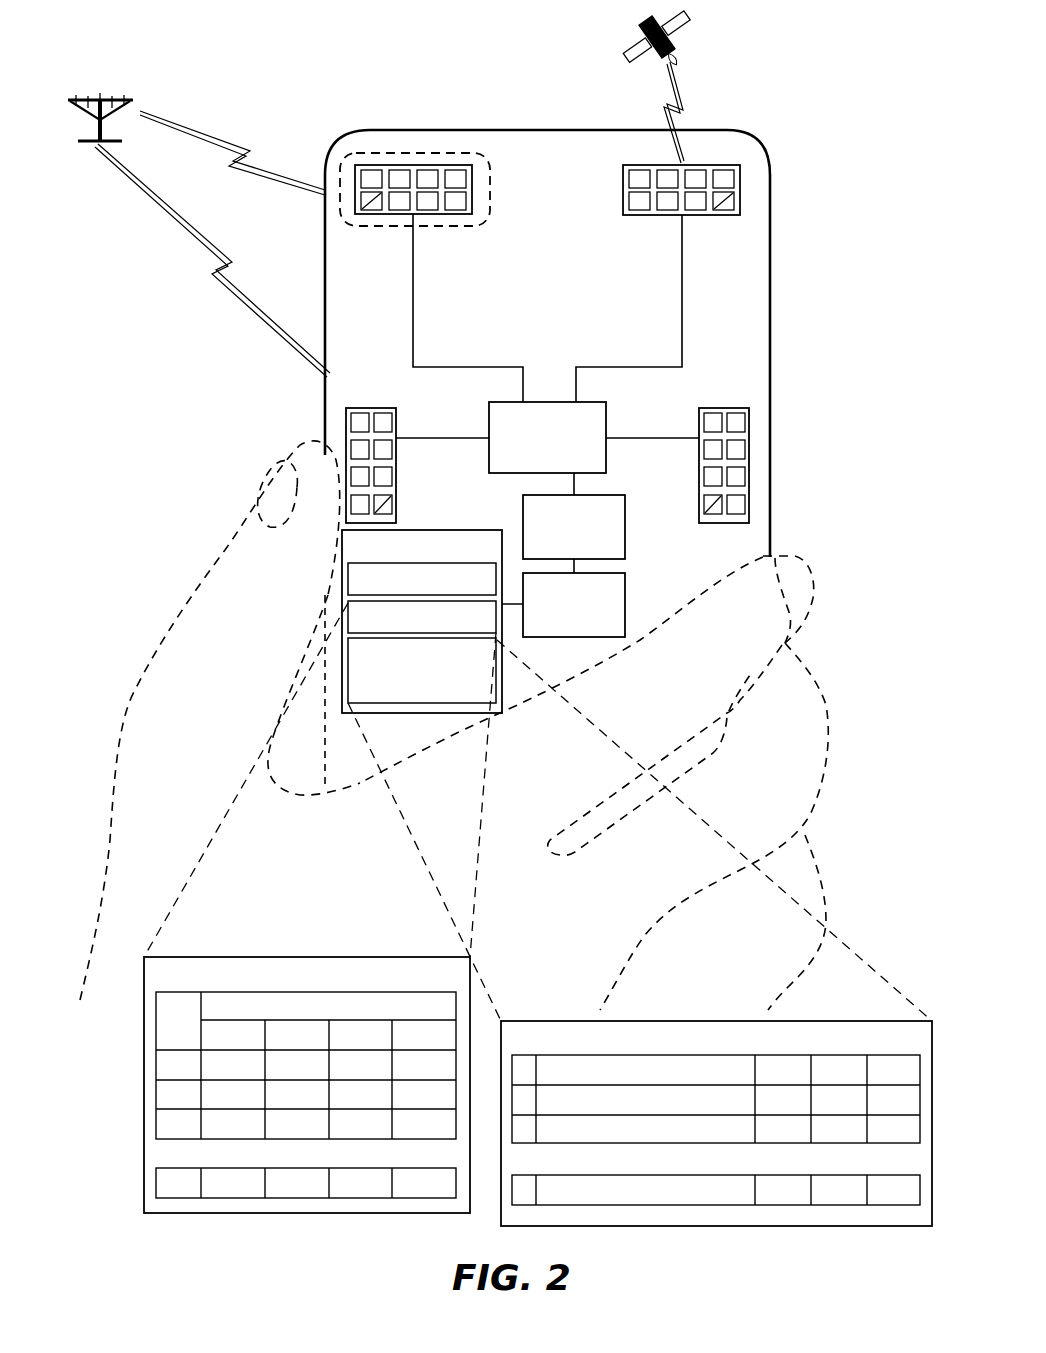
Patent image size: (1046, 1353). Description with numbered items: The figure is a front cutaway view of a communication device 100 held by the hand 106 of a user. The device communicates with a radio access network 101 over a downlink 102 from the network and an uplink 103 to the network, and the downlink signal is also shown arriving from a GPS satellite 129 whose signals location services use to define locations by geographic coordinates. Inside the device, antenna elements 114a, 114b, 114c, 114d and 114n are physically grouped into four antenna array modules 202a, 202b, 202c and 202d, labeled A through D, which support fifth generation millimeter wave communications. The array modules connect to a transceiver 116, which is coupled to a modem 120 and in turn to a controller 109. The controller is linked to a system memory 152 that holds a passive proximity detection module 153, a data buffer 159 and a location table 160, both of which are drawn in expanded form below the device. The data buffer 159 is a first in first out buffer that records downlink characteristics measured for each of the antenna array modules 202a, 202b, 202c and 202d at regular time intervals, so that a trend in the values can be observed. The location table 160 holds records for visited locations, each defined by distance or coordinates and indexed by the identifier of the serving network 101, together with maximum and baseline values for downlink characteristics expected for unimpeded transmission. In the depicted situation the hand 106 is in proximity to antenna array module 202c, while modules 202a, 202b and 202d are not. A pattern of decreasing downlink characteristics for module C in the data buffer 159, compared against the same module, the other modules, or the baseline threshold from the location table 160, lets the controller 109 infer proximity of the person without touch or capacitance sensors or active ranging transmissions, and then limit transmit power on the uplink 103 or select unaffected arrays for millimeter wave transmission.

The communication device 100 is at (326, 312).
The radio access network (RAN) 101 is at (80, 94).
The downlink 102 is at (220, 140).
The uplink 103 is at (168, 228).
The hand 106 is at (207, 552).
The controller 109 is at (574, 605).
The antenna element 114a is at (400, 168).
The antenna element 114b is at (427, 168).
The antenna element 114c is at (740, 180).
The antenna element 114d is at (750, 443).
The antenna element 114n is at (750, 475).
The transceiver 116 is at (547, 437).
The modem 120 is at (574, 527).
The GPS satellite 129 is at (695, 35).
The system memory 152 is at (538, 878).
The passive proximity detection module 153 is at (422, 579).
The data buffer 159 is at (320, 907).
The location table 160 is at (640, 932).
The antenna array module 202a is at (419, 165).
The antenna array module 202b is at (745, 172).
The antenna array module 202c is at (345, 410).
The antenna array module 202d is at (770, 421).